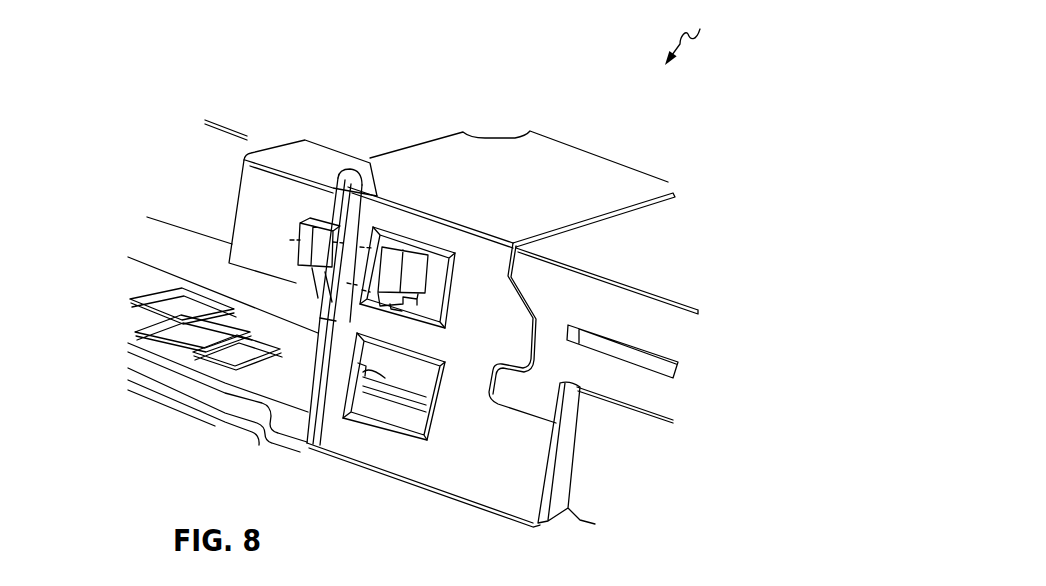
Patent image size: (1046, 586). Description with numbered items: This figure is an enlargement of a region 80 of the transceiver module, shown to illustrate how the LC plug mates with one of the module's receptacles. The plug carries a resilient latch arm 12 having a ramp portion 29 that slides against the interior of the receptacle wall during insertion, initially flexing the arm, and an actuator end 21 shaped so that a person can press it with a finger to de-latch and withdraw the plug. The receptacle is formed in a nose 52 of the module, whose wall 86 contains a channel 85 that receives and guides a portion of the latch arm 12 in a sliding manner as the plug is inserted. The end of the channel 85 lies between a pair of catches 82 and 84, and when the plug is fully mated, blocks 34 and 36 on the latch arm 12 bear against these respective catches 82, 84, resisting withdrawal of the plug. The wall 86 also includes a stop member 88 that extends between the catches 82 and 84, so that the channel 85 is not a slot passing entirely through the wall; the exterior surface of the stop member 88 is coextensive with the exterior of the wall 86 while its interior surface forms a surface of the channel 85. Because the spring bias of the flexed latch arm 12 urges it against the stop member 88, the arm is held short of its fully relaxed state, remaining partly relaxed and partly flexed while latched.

The region 80 is at (693, 35).
The actuator end 21 is at (306, 233).
The stop member 88 is at (337, 245).
The catch 84 is at (370, 298).
The catch 82 is at (396, 246).
The block 34 is at (399, 247).
The ramp portion 29 is at (410, 245).
The nose 52 is at (548, 137).
The latch arm 12 is at (309, 274).
The channel 85 is at (366, 368).
The block 36 is at (385, 293).
The wall 86 is at (513, 494).